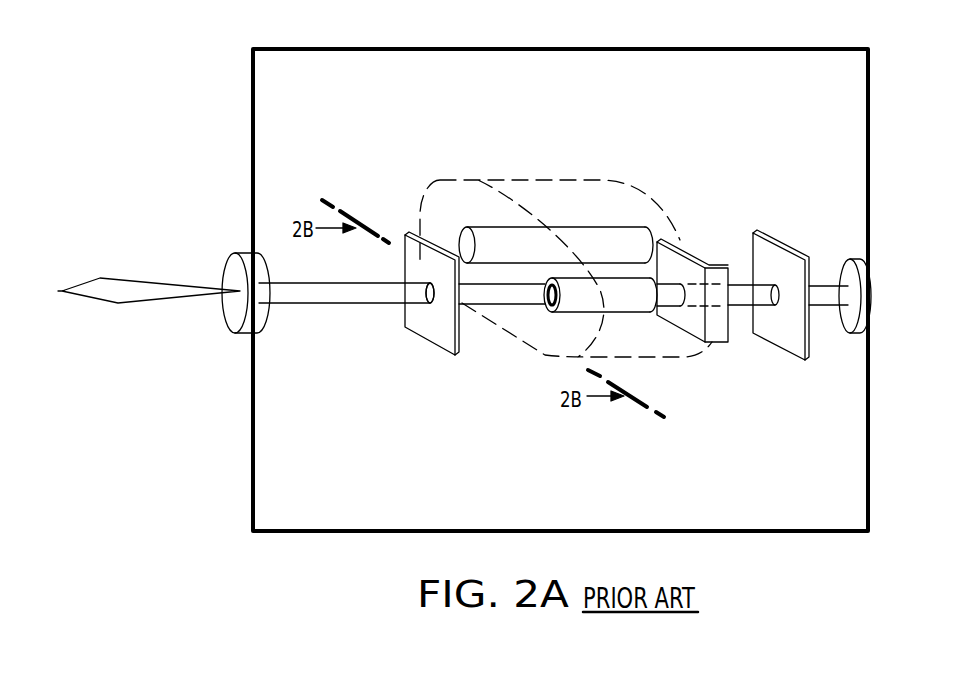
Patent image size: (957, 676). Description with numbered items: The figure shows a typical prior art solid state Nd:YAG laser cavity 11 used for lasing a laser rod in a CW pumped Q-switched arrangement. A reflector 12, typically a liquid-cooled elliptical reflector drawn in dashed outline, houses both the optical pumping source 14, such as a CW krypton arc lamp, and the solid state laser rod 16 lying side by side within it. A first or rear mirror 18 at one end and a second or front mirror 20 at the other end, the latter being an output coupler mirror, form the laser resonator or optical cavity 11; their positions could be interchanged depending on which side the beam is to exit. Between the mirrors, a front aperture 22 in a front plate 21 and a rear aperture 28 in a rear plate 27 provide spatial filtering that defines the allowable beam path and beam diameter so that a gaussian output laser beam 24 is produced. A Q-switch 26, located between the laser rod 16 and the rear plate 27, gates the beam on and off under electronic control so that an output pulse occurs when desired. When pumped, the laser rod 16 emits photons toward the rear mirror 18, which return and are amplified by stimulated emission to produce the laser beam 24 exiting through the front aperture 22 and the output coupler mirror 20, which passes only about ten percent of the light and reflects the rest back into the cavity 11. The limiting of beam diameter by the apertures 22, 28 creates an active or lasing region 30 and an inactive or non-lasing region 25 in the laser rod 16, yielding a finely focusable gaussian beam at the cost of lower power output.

The laser cavity 11 is at (597, 48).
The reflector 12 is at (490, 179).
The optical pumping source 14 is at (593, 226).
The laser rod 16 is at (644, 315).
The rear mirror 18 is at (848, 328).
The front mirror 20 is at (268, 328).
The front plate 21 is at (405, 233).
The front aperture 22 is at (428, 304).
The laser beam 24 is at (163, 290).
The non-lasing region 25 is at (548, 313).
The Q-switch 26 is at (698, 256).
The rear plate 27 is at (800, 255).
The rear aperture 28 is at (778, 310).
The lasing region 30 is at (549, 302).